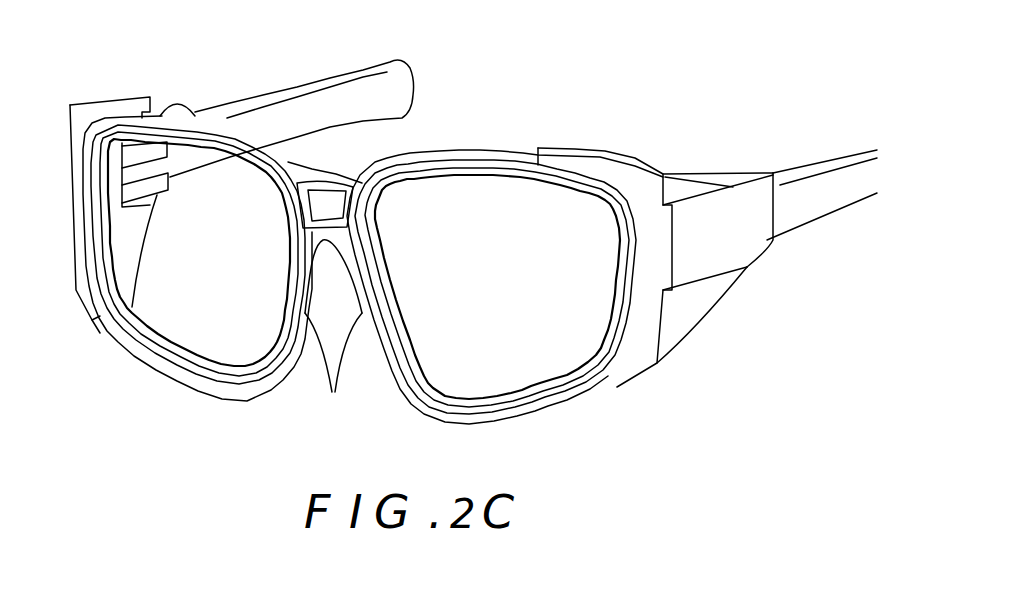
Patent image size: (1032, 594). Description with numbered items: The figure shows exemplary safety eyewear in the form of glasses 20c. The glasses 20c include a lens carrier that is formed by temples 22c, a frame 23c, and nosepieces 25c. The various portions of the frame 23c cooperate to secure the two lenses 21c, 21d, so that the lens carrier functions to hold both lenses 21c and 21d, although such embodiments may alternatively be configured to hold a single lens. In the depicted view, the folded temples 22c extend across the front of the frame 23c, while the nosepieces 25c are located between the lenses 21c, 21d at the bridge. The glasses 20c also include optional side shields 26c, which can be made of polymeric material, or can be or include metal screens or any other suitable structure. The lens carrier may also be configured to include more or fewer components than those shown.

The glasses 20c is at (562, 28).
The lens 21c is at (232, 270).
The lens 21d is at (532, 275).
The temples 22c is at (289, 95).
The frame 23c is at (177, 108).
The nosepieces 25c is at (334, 392).
The side shields 26c is at (672, 255).